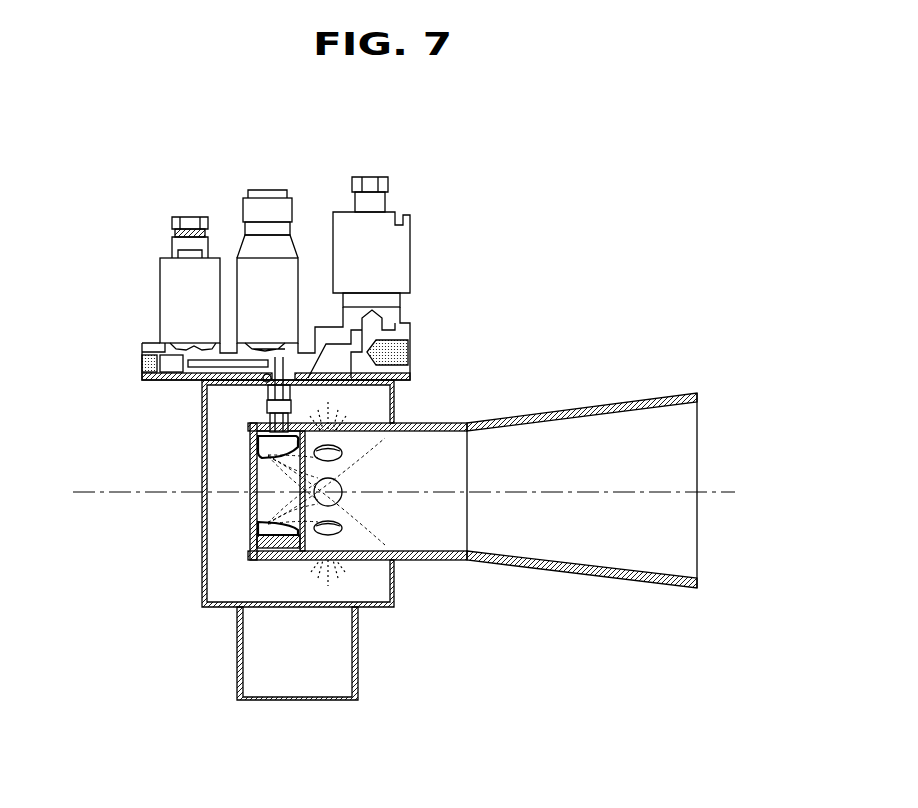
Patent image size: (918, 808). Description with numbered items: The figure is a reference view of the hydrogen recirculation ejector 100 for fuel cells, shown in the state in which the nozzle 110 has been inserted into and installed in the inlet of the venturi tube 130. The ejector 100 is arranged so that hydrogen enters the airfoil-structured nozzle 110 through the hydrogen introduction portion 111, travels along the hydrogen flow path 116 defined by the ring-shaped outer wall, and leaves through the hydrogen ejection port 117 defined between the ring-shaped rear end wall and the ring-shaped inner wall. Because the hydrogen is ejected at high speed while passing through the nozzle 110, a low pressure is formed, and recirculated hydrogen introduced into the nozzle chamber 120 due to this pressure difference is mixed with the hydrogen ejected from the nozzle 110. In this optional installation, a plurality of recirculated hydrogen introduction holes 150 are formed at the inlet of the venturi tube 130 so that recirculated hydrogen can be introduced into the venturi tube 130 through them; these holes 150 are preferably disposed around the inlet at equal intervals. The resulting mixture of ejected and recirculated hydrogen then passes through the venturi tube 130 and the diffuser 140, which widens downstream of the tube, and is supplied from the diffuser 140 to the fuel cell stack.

The hydrogen recirculation ejector 100 is at (83, 177).
The nozzle 110 is at (243, 592).
The hydrogen introduction portion 111 is at (157, 341).
The hydrogen flow path 116 is at (257, 436).
The hydrogen ejection port 117 is at (277, 523).
The nozzle chamber 120 is at (237, 612).
The venturi tube 130 is at (403, 458).
The diffuser 140 is at (568, 530).
The recirculated hydrogen introduction holes 150 is at (345, 462).